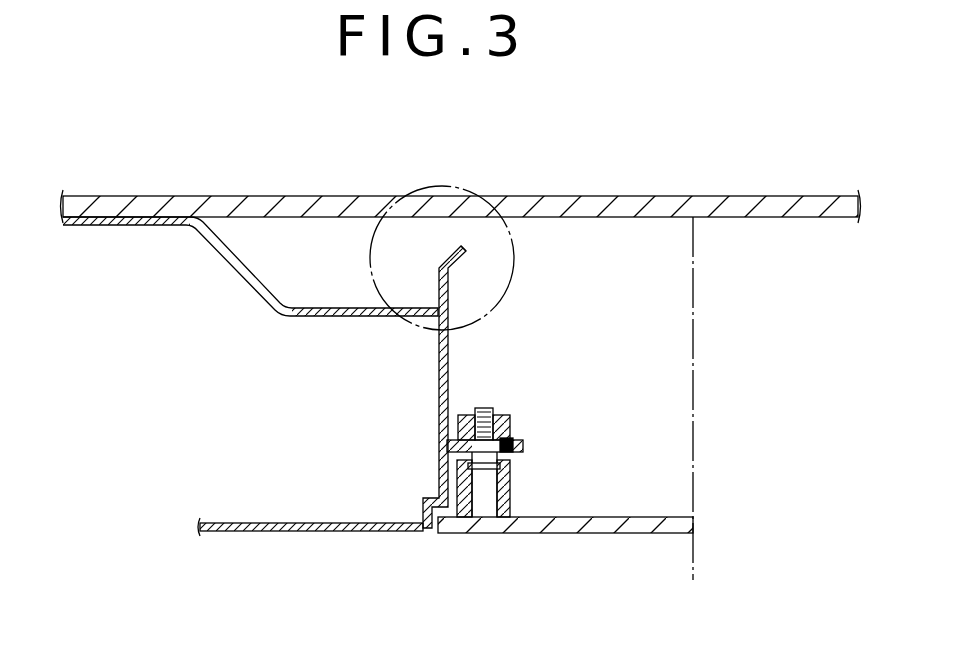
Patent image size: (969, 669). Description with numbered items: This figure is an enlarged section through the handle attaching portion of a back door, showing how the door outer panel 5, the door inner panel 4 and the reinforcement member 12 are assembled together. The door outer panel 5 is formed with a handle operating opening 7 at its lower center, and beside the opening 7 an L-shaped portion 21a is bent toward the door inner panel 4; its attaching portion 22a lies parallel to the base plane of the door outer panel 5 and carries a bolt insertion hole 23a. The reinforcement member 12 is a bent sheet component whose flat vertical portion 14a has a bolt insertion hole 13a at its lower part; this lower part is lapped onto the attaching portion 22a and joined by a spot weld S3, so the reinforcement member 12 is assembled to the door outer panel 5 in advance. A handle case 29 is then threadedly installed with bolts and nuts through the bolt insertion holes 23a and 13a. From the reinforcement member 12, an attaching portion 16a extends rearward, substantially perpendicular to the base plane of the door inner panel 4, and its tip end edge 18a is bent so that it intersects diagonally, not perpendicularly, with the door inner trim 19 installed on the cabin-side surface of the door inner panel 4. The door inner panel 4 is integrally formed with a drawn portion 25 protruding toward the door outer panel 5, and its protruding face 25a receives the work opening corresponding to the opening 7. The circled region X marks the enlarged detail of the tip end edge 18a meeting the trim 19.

The door inner panel 4 is at (225, 262).
The door outer panel 5 is at (296, 533).
The handle operating opening 7 is at (434, 530).
The reinforcement member 12 is at (448, 357).
The bolt insertion hole 13a is at (492, 418).
The vertical portion 14a is at (520, 446).
The attaching portion 16a is at (437, 368).
The tip end edge 18a is at (450, 248).
The door inner trim 19 is at (772, 208).
The L-shaped portion 21a is at (440, 460).
The attaching portion 22a is at (506, 453).
The bolt insertion hole 23a is at (480, 452).
The drawn portion 25 is at (292, 318).
The protruding face 25a is at (338, 317).
The handle case 29 is at (582, 521).
The spot weld S3 is at (512, 442).
The enlarged portion X is at (461, 191).